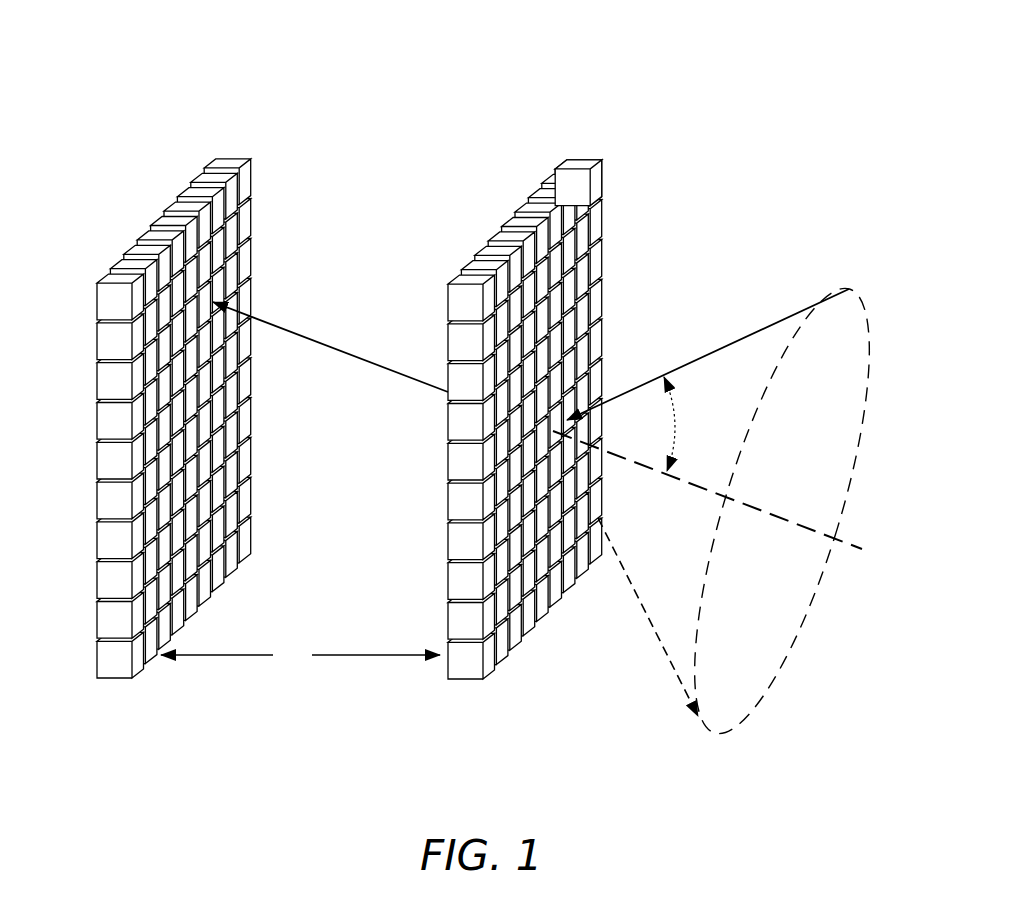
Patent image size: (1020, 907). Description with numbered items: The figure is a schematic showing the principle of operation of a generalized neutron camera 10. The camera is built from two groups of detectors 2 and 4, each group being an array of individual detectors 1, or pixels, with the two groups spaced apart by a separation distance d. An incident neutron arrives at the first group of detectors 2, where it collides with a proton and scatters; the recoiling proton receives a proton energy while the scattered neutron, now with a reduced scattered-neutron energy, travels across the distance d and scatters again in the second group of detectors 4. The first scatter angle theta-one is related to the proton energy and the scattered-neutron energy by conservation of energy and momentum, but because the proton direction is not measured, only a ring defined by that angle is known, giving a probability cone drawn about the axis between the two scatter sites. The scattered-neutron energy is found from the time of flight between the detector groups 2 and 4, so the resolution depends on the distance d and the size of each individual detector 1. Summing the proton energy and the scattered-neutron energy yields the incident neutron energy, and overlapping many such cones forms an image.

The neutron camera 10 is at (308, 96).
The first group of detectors 2 is at (182, 168).
The second group of detectors 4 is at (540, 163).
The individual detector 1 is at (603, 180).